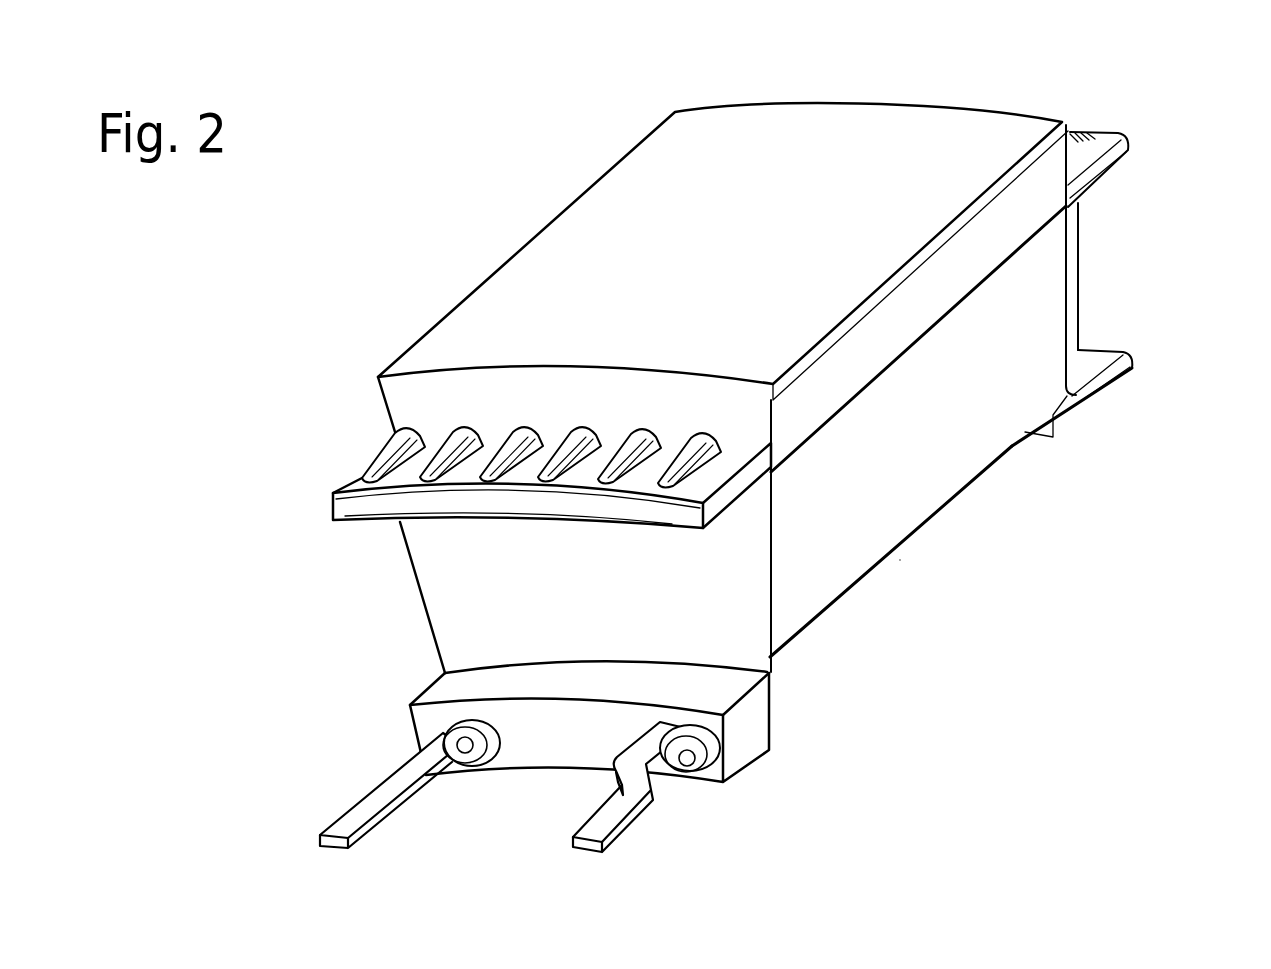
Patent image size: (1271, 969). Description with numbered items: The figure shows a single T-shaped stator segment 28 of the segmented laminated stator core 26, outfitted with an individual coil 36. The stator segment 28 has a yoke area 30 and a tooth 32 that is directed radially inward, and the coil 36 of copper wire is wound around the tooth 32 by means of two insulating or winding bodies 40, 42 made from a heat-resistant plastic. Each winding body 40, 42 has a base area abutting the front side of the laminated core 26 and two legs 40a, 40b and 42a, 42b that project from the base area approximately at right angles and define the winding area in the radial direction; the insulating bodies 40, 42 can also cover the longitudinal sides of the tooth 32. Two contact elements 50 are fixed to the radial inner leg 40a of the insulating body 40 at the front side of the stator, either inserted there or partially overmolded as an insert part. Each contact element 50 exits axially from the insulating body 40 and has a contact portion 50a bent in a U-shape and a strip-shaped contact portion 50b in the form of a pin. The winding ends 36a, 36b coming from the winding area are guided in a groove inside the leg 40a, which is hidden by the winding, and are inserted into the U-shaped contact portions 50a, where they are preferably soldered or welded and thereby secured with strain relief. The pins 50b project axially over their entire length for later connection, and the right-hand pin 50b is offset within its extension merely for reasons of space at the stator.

The laminated stator core 26 is at (723, 206).
The stator segment 28 is at (888, 667).
The yoke area 30 is at (938, 142).
The tooth 32 is at (970, 488).
The individual coil 36 is at (919, 488).
The winding end 36a is at (465, 752).
The winding end 36b is at (705, 750).
The insulating body 40 is at (323, 490).
The radial inner leg 40a is at (440, 697).
The leg 40b is at (343, 520).
The winding body 42 is at (1150, 96).
The leg 42a is at (1120, 373).
The leg 42b is at (1112, 152).
The contact element 50 is at (437, 797).
The U-shaped contact portion 50a is at (490, 738).
The strip-shaped contact portion 50b is at (378, 822).